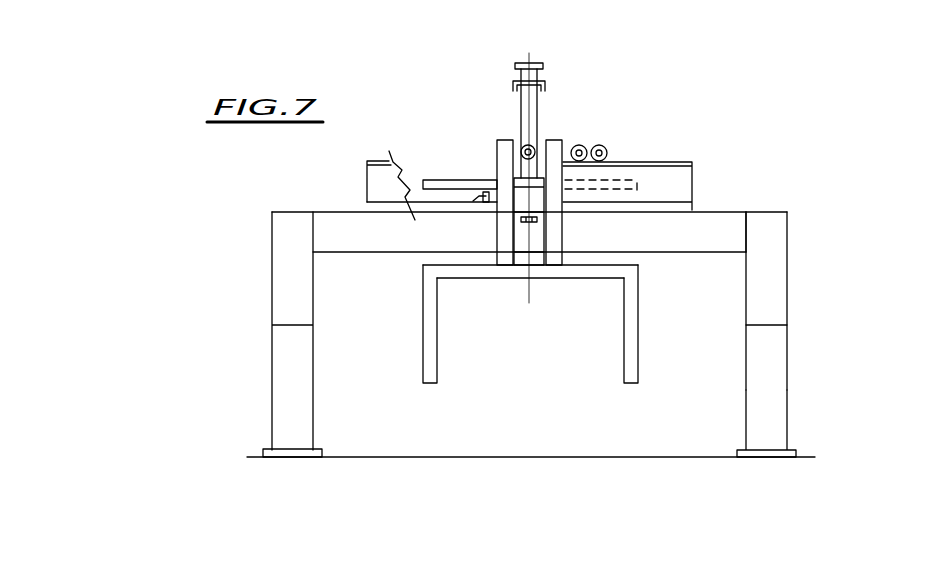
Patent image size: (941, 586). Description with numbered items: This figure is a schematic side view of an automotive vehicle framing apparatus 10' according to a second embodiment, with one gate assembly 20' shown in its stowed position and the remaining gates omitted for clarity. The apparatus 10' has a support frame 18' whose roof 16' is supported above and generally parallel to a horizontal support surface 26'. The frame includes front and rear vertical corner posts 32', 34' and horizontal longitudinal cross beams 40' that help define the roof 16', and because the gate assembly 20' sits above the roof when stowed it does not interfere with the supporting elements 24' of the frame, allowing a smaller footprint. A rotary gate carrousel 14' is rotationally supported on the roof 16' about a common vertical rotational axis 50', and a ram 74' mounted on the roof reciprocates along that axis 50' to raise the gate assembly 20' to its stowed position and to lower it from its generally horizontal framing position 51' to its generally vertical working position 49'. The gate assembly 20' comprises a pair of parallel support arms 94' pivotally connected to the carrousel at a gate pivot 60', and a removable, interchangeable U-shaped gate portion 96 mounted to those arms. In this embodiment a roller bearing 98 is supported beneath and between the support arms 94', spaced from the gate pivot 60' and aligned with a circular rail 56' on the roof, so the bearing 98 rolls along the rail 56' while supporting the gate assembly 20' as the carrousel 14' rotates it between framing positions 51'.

The automotive framing apparatus 10' is at (551, 264).
The rotary gate carrousel 14' is at (566, 118).
The support frame roof 16' is at (548, 200).
The support frame 18' is at (805, 268).
The gate assembly 20' is at (667, 324).
The supporting elements 24' is at (816, 315).
The support surface 26' is at (531, 428).
The front vertical corner posts 32' is at (807, 407).
The rear vertical corner posts 34' is at (268, 334).
The horizontal longitudinal cross beams 40' is at (796, 222).
The working position 49' is at (387, 324).
The common vertical rotational axis 50' is at (500, 197).
The framing position 51' is at (640, 162).
The circular rail 56' is at (432, 171).
The gate pivot 60' is at (549, 185).
The ram 74' is at (563, 48).
The support arms 94' is at (567, 231).
The U-shaped gate portion 96 is at (524, 324).
The roller bearing 98 is at (597, 145).